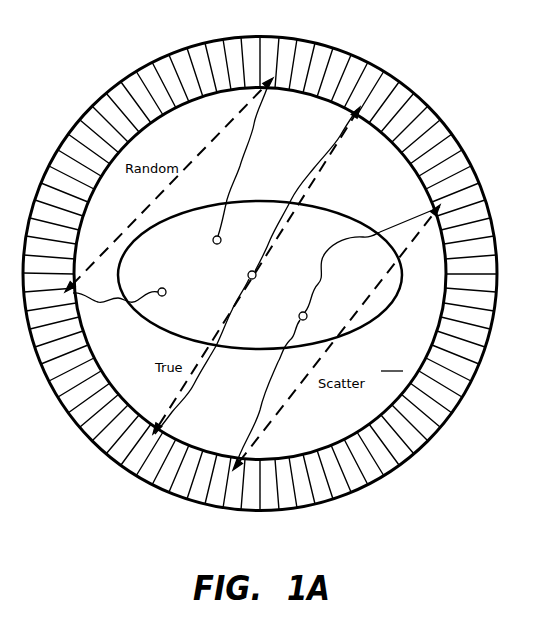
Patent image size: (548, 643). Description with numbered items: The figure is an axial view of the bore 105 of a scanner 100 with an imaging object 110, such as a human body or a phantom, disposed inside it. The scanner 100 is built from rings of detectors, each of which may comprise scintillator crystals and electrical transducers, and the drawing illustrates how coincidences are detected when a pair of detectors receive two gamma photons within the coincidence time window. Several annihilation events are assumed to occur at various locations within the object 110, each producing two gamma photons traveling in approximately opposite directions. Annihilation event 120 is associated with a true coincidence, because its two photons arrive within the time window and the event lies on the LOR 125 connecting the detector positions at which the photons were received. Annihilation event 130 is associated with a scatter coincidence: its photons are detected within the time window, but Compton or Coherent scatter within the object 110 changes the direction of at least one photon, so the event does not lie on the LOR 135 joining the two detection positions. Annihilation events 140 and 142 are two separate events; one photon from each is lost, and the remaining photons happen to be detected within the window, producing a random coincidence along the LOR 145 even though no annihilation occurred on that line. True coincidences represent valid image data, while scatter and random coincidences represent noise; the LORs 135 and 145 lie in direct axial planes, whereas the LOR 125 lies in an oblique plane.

The scanner 100 is at (333, 47).
The bore 105 is at (393, 363).
The imaging object 110 is at (253, 197).
The annihilation event 120 is at (256, 274).
The LOR 125 is at (322, 168).
The annihilation event 130 is at (300, 313).
The LOR 135 is at (406, 250).
The annihilation event 140 is at (220, 244).
The annihilation event 142 is at (166, 289).
The LOR 145 is at (185, 169).